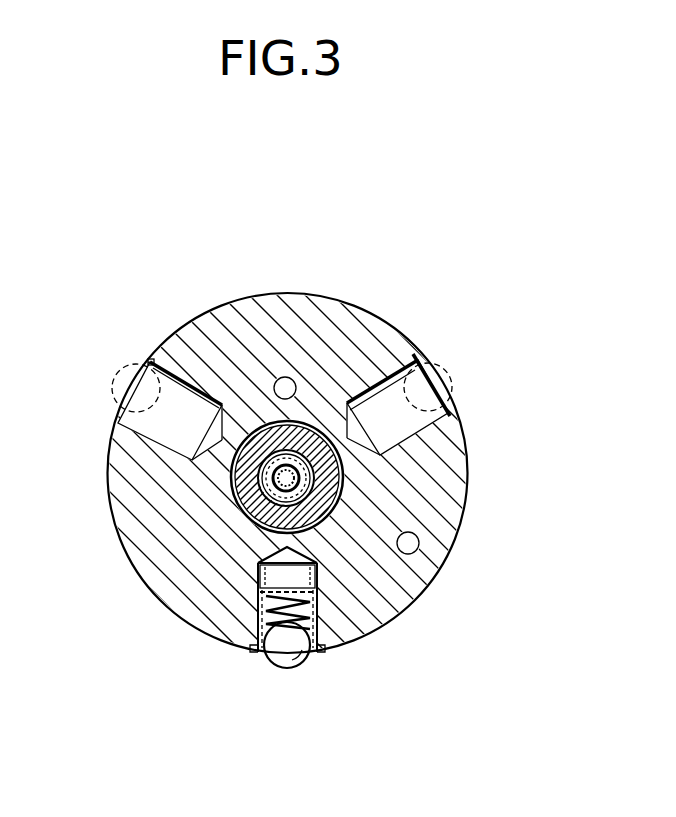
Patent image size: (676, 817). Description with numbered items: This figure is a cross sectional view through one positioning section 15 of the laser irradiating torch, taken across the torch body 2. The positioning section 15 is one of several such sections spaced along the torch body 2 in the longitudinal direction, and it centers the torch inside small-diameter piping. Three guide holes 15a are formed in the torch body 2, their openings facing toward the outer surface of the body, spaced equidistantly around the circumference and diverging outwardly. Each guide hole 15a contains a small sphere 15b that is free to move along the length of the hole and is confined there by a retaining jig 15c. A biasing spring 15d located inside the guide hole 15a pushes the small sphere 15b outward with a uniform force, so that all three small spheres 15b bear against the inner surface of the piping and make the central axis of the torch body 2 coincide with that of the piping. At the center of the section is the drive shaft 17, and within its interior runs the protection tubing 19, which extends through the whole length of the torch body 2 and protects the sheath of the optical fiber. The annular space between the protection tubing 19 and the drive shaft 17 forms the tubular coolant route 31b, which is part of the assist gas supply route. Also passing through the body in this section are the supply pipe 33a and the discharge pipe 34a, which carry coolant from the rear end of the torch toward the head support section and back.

The torch body 2 is at (467, 483).
The positioning section 15 is at (416, 627).
The guide hole 15a is at (366, 633).
The small sphere 15b is at (300, 666).
The retaining jig 15c is at (255, 615).
The biasing spring 15d is at (258, 598).
The drive shaft 17 is at (313, 430).
The protection tubing 19 is at (264, 478).
The tubular coolant route 31b is at (292, 475).
The supply pipe 33a is at (419, 551).
The discharge pipe 34a is at (285, 378).